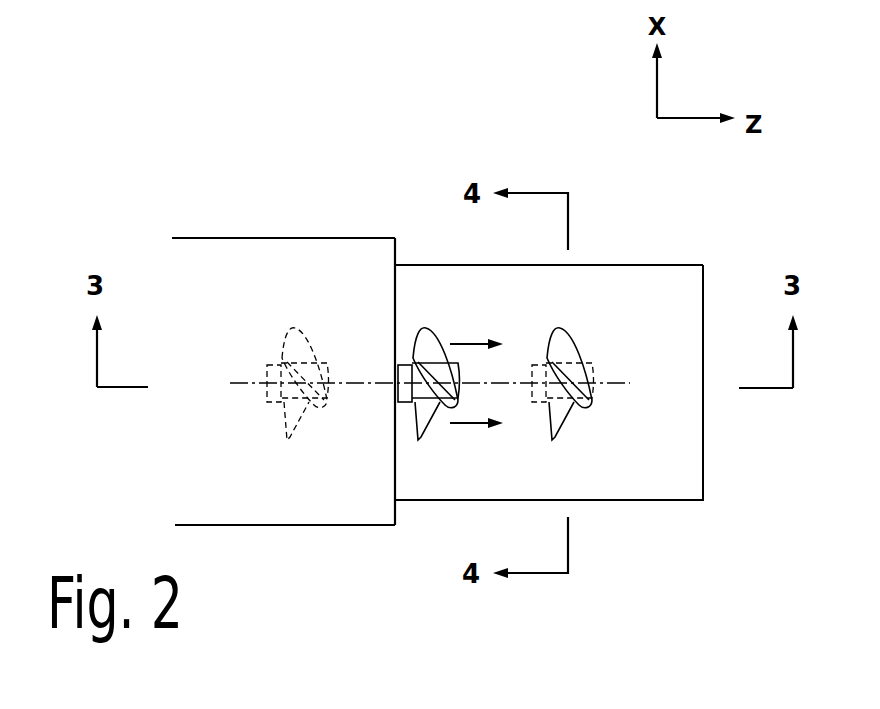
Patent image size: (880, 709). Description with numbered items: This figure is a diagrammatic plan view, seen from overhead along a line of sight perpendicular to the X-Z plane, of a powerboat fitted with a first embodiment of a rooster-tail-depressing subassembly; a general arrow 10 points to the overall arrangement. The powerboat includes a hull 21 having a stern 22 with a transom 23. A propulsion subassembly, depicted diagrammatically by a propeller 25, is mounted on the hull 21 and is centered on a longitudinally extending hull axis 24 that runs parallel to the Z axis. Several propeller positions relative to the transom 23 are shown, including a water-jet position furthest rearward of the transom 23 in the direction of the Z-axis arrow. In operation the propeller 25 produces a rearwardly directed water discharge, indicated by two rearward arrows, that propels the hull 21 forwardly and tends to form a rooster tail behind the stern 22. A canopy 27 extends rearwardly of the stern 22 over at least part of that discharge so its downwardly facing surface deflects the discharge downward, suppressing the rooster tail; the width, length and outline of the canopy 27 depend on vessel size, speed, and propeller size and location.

The propulsion device 10 is at (266, 132).
The hull 21 is at (277, 257).
The stern 22 is at (380, 247).
The transom 23 is at (397, 250).
The hull axis 24 is at (242, 383).
The propeller 25 is at (418, 440).
The canopy 27 is at (655, 488).